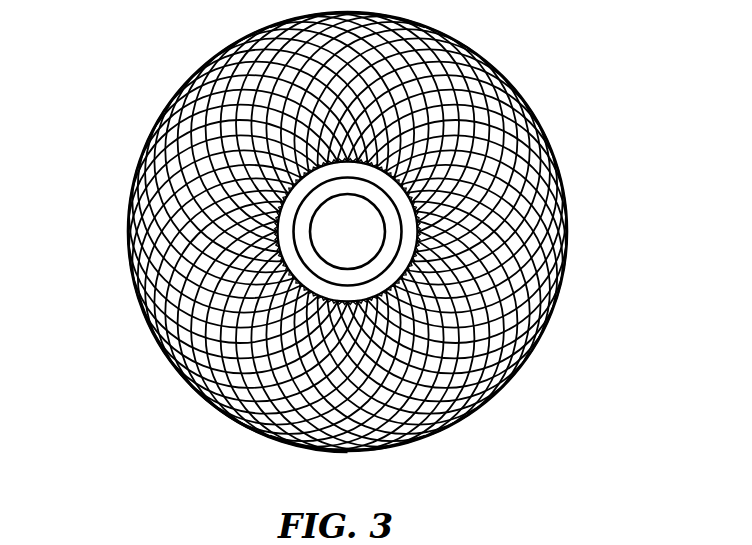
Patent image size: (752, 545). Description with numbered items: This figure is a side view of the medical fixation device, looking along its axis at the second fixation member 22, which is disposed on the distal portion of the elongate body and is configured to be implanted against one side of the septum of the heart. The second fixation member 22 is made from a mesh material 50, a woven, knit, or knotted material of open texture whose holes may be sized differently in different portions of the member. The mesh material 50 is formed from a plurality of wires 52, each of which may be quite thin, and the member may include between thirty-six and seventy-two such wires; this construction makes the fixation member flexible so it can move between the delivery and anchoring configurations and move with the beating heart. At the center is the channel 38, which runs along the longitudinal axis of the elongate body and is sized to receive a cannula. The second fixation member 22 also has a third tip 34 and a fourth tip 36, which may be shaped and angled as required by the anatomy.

The second fixation member 22 is at (207, 423).
The third tip 34 is at (498, 7).
The fourth tip 36 is at (498, 400).
The channel 38 is at (345, 232).
The mesh material 50 is at (195, 70).
The plurality of wires 52 is at (548, 117).